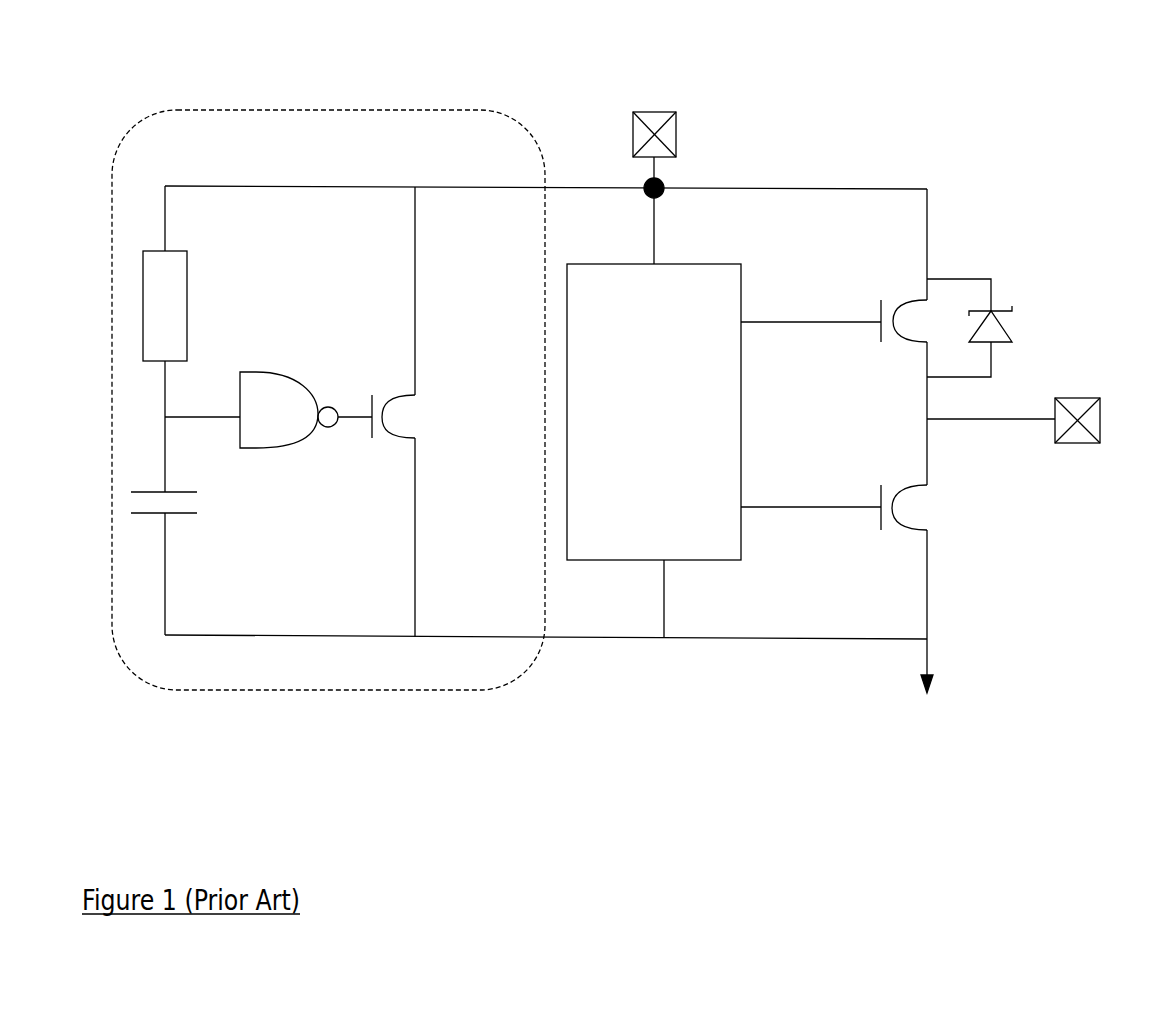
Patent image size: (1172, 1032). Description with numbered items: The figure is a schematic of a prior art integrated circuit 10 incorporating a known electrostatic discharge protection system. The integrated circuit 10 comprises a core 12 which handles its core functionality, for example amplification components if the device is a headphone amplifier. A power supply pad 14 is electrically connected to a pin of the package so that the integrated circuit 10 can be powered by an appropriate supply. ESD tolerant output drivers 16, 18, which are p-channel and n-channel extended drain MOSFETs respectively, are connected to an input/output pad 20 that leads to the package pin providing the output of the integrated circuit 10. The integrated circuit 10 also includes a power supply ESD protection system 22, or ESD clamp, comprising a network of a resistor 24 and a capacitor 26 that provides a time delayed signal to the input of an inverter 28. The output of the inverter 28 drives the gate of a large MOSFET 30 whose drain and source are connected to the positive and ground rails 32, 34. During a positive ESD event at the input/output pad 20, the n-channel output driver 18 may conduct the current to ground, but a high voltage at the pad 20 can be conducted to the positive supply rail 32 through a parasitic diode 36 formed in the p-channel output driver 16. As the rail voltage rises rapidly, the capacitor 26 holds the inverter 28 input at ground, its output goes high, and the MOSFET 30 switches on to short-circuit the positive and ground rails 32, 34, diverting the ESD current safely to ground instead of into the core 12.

The integrated circuit 10 is at (932, 87).
The core 12 is at (633, 550).
The power supply pad 14 is at (665, 133).
The p-channel MOSFET output driver 16 is at (913, 312).
The n-channel MOSFET output driver 18 is at (925, 508).
The input/output pad 20 is at (1088, 420).
The power supply ESD protection system 22 is at (423, 690).
The resistor 24 is at (176, 305).
The capacitor 26 is at (195, 515).
The inverter 28 is at (283, 437).
The large MOSFET 30 is at (415, 406).
The positive rail 32 is at (894, 187).
The ground rail 34 is at (717, 640).
The parasitic diode 36 is at (1002, 333).